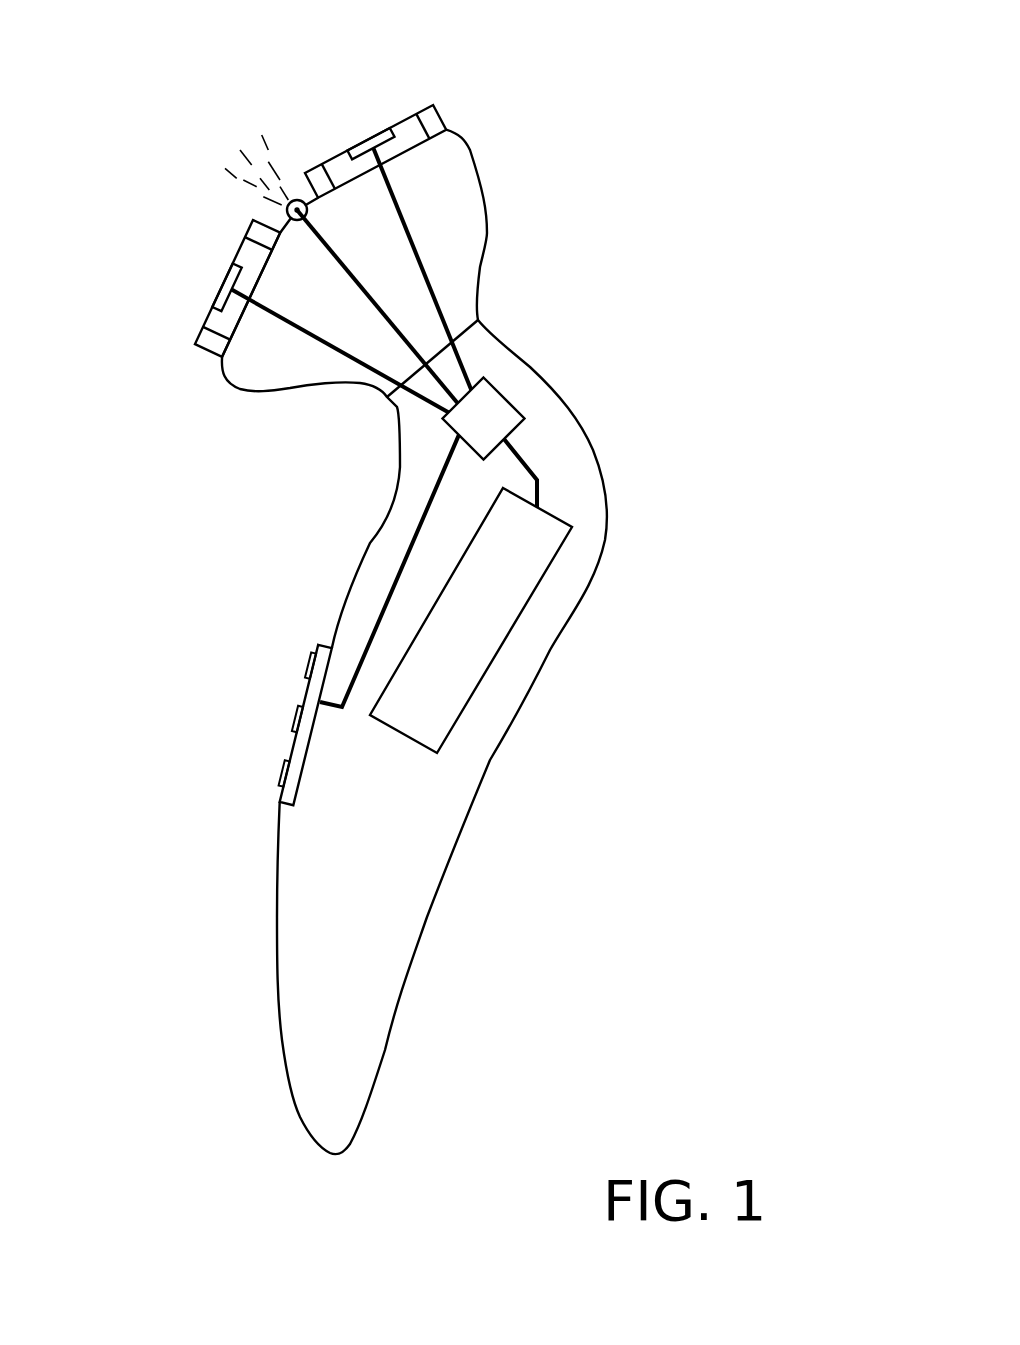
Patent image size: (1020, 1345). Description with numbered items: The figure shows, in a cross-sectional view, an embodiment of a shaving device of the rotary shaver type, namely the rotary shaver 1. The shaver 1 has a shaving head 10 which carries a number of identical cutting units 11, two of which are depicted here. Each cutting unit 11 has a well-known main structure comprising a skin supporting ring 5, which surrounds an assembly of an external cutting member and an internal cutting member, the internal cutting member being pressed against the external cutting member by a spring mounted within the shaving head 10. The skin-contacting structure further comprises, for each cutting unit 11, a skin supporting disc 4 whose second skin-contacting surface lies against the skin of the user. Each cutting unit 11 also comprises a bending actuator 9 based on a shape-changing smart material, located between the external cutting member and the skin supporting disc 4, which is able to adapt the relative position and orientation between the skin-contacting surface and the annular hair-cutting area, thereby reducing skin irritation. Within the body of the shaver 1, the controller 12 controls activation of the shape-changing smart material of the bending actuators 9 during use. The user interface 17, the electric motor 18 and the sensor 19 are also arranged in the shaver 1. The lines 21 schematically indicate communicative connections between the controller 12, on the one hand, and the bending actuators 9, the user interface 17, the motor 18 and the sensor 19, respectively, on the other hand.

The rotary shaver 1 is at (592, 200).
The skin supporting disc 4 is at (360, 117).
The skin supporting ring 5 is at (320, 181).
The bending actuator 9 is at (270, 181).
The shaving head 10 is at (502, 160).
The cutting unit 11 is at (407, 80).
The controller 12 is at (469, 427).
The user interface 17 is at (278, 682).
The electric motor 18 is at (458, 628).
The sensor 19 is at (297, 210).
The lines 21 is at (421, 265).